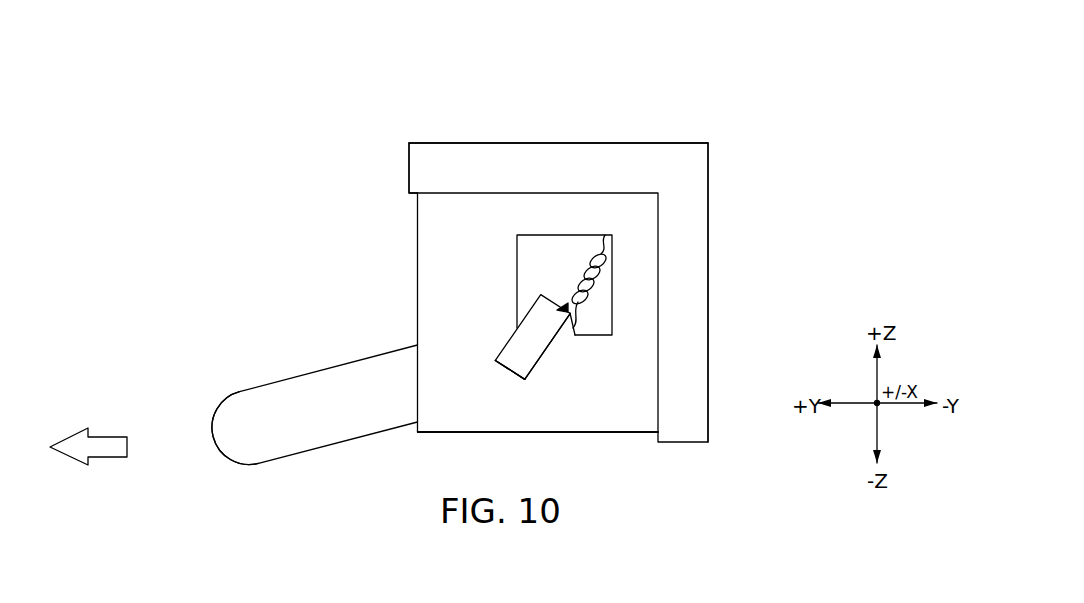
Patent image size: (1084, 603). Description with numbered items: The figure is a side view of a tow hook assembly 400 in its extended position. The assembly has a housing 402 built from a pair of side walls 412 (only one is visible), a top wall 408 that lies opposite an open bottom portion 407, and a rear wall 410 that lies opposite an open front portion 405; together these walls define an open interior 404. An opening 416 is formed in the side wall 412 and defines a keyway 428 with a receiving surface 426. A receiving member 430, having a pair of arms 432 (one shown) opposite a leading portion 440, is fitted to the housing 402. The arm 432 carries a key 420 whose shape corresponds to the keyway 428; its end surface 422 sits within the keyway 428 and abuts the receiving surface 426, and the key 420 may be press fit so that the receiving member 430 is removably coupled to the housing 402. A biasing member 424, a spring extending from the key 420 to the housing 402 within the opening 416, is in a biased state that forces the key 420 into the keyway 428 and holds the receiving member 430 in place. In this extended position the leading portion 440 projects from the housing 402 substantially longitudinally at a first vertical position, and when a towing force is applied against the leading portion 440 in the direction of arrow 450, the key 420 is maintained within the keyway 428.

The tow hook assembly 400 is at (713, 98).
The housing 402 is at (710, 197).
The open interior 404 is at (407, 263).
The open front portion 405 is at (407, 205).
The open bottom portion 407 is at (457, 438).
The top wall 408 is at (557, 152).
The rear wall 410 is at (710, 276).
The side wall 412 is at (615, 418).
The opening 416 is at (538, 258).
The key 420 is at (507, 345).
The end surface 422 is at (503, 370).
The biasing member 424 is at (588, 257).
The receiving surface 426 is at (520, 380).
The keyway 428 is at (530, 378).
The receiving member 430 is at (310, 365).
The arm 432 is at (563, 340).
The leading portion 440 is at (212, 437).
The arrow 450 is at (107, 437).